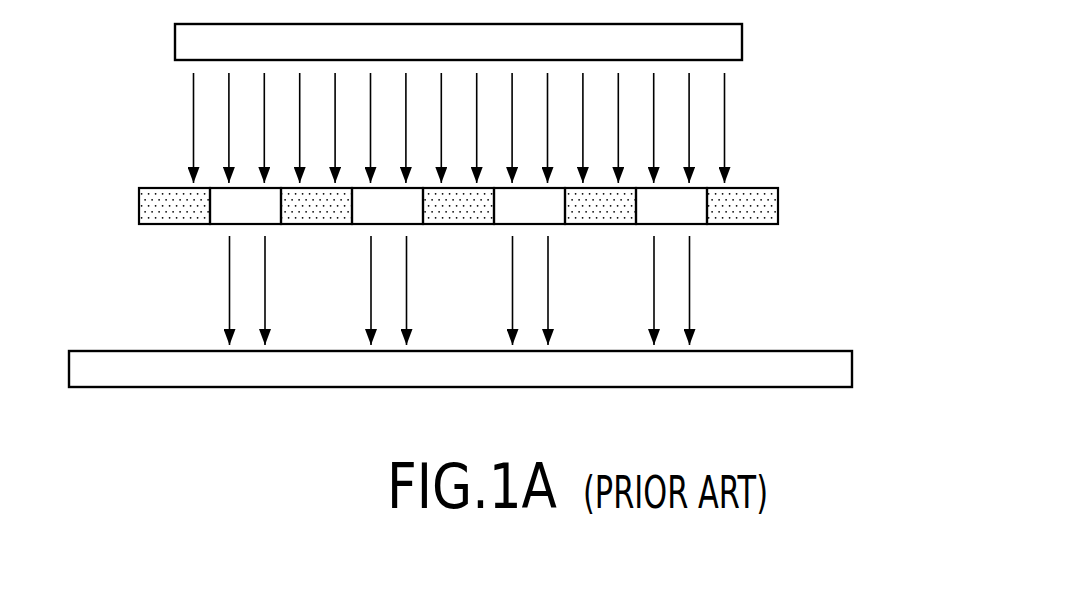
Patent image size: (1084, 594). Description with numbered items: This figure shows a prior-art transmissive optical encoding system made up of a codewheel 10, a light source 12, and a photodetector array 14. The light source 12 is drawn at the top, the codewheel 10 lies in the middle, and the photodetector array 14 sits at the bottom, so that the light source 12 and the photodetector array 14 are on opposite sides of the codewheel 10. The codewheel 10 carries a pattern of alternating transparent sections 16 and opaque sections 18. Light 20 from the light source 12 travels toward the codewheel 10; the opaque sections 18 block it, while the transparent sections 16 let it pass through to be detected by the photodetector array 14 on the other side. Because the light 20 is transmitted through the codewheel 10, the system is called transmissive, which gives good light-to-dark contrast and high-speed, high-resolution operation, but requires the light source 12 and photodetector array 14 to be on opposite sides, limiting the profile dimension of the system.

The codewheel 10 is at (510, 198).
The light source 12 is at (742, 35).
The photodetector array 14 is at (843, 370).
The transparent sections 16 is at (698, 213).
The opaque sections 18 is at (752, 193).
The light 20 is at (724, 107).